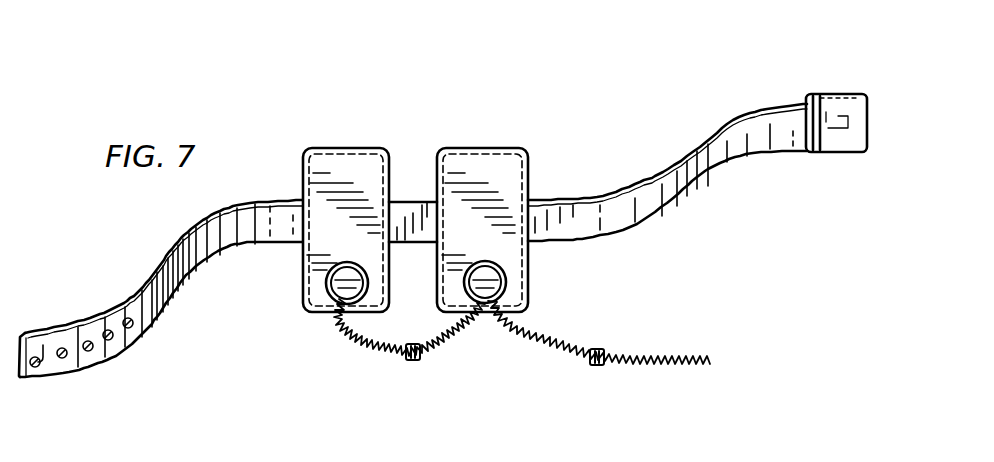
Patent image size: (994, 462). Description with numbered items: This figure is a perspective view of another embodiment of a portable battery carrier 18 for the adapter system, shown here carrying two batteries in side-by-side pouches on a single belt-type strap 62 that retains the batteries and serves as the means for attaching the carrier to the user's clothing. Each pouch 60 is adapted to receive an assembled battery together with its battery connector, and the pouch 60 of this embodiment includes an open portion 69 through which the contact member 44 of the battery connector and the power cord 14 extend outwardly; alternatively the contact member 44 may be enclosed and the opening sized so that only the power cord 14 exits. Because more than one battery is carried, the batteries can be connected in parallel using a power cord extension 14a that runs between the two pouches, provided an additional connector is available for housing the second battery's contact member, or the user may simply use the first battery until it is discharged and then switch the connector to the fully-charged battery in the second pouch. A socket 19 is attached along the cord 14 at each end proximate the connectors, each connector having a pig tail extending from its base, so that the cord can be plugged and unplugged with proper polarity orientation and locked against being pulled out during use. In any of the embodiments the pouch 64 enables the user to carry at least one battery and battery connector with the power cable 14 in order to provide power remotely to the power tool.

The power cord 14 is at (623, 367).
The power cord extension 14a is at (460, 340).
The portable battery carrier 18 is at (403, 225).
The socket 19 is at (418, 362).
The contact member 44 is at (333, 312).
The pouch 60 is at (726, 138).
The strap 62 is at (828, 92).
The pouch 64 is at (530, 162).
The open portion 69 is at (302, 285).